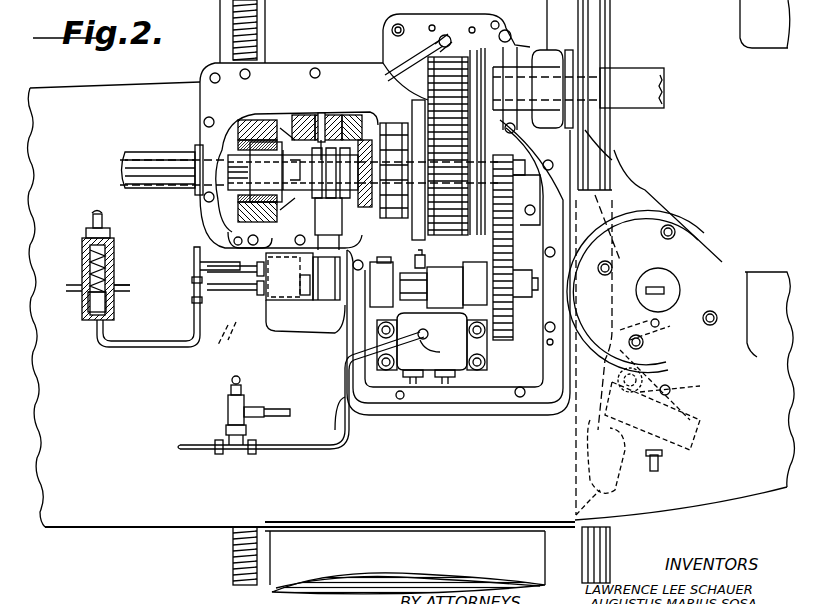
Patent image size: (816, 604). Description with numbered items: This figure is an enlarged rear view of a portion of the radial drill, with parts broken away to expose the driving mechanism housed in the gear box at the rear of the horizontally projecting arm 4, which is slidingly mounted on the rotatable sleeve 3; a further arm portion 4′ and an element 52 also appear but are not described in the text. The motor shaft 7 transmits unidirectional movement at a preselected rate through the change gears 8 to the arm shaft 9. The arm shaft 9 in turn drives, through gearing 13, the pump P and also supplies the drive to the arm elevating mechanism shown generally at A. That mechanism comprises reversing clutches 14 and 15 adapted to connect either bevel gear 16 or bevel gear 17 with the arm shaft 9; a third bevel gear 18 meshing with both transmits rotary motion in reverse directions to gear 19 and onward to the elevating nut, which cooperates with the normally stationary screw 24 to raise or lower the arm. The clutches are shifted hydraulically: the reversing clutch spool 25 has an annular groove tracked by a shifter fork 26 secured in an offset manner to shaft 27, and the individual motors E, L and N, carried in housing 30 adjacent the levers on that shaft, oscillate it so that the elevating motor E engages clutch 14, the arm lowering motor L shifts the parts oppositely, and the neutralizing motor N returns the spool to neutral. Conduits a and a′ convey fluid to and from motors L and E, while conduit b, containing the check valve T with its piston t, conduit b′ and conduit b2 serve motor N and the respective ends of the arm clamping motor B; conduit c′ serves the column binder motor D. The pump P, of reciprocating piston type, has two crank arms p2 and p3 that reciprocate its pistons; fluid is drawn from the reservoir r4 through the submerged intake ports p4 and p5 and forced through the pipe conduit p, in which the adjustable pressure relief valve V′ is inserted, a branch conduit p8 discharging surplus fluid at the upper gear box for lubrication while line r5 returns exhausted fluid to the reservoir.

The rotatable sleeve 3 is at (405, 562).
The horizontally projecting arm 4 is at (301, 304).
The casing portion 4′ is at (612, 260).
The motor shaft 7 is at (650, 79).
The change gears 8 is at (458, 48).
The arm shaft 9 is at (150, 155).
The gearing 13 is at (514, 236).
The reversing clutch 14 is at (268, 118).
The reversing clutch 15 is at (365, 136).
The bevel gear 16 is at (290, 116).
The bevel gear 17 is at (395, 218).
The third bevel gear 18 is at (320, 113).
The gear 19 is at (336, 140).
The normally stationary screw 24 is at (232, 40).
The reversing clutch spool 25 is at (292, 200).
The shifter fork 26 is at (342, 204).
The shaft 27 is at (316, 330).
The housing 30 is at (264, 290).
The guide rail 52 is at (604, 30).
The arm elevating clutch mechanism A is at (330, 112).
The arm clamping motor B is at (672, 418).
The column binder motor D is at (688, 252).
The neutralizing motor N is at (276, 325).
The pump P is at (432, 348).
The check valve T is at (72, 248).
The adjustable pressure relief valve V′ is at (224, 410).
The elevating motor E is at (216, 342).
The arm lowering motor L is at (229, 340).
The conduit a is at (200, 246).
The conduit a′ is at (206, 270).
The conduit b is at (140, 352).
The conduit b′ is at (78, 290).
The conduit b2 is at (662, 478).
The conduit c′ is at (652, 287).
The pipe conduit p is at (192, 440).
The crank arm p2 is at (450, 284).
The crank arm p3 is at (410, 268).
The intake port p4 is at (455, 378).
The intake port p5 is at (425, 378).
The branch conduit p8 is at (410, 55).
The reservoir r4 is at (478, 361).
The line r5 is at (122, 294).
The piston t is at (88, 318).